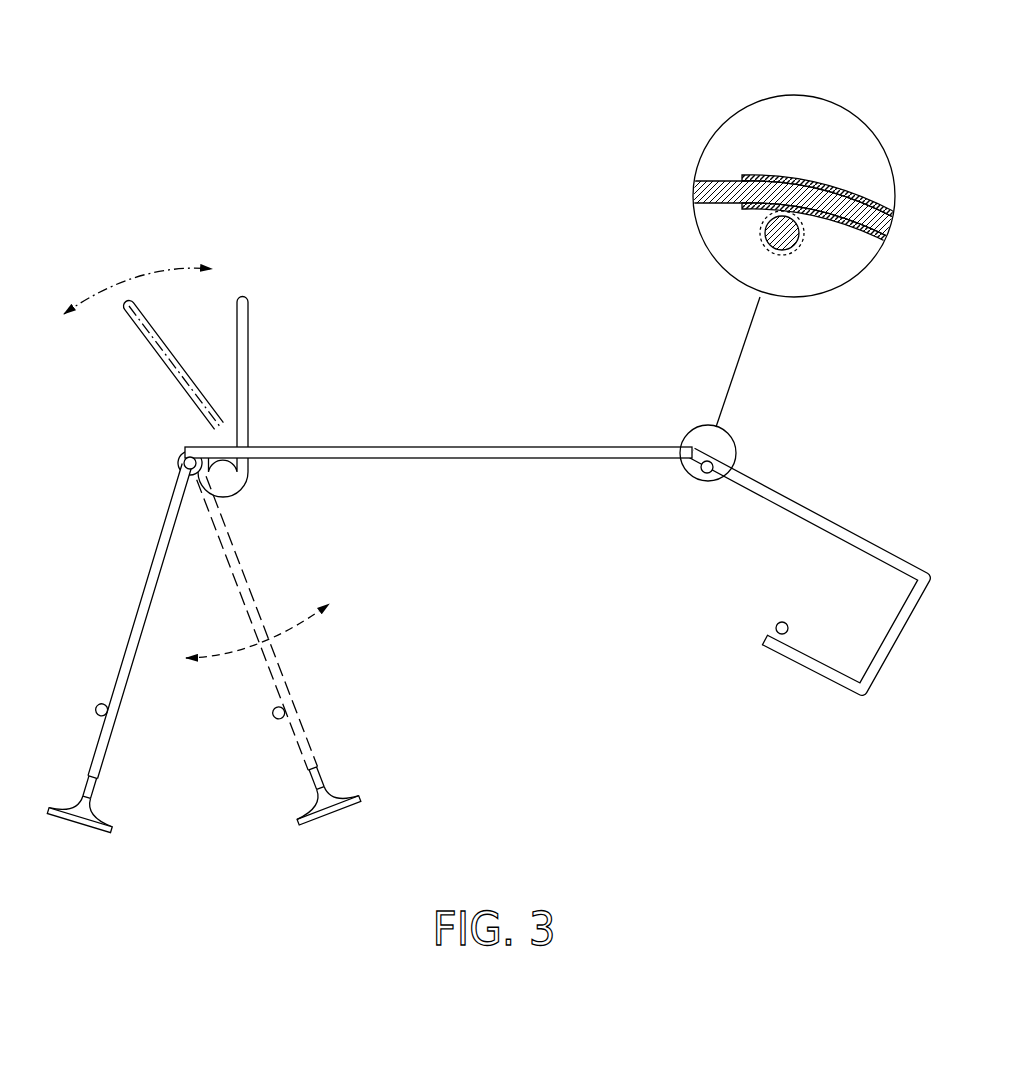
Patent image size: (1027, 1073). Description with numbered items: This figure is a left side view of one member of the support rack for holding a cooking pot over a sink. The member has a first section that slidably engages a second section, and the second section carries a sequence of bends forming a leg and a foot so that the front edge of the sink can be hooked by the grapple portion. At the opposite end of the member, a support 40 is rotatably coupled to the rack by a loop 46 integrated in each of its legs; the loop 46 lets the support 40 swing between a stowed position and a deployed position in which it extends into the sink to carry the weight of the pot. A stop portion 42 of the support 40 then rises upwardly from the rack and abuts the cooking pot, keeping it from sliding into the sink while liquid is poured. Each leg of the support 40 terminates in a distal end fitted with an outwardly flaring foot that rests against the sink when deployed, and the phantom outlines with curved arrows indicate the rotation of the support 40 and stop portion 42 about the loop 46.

The support 40 is at (135, 636).
The stop portion 42 is at (256, 294).
The loop 46 is at (178, 457).